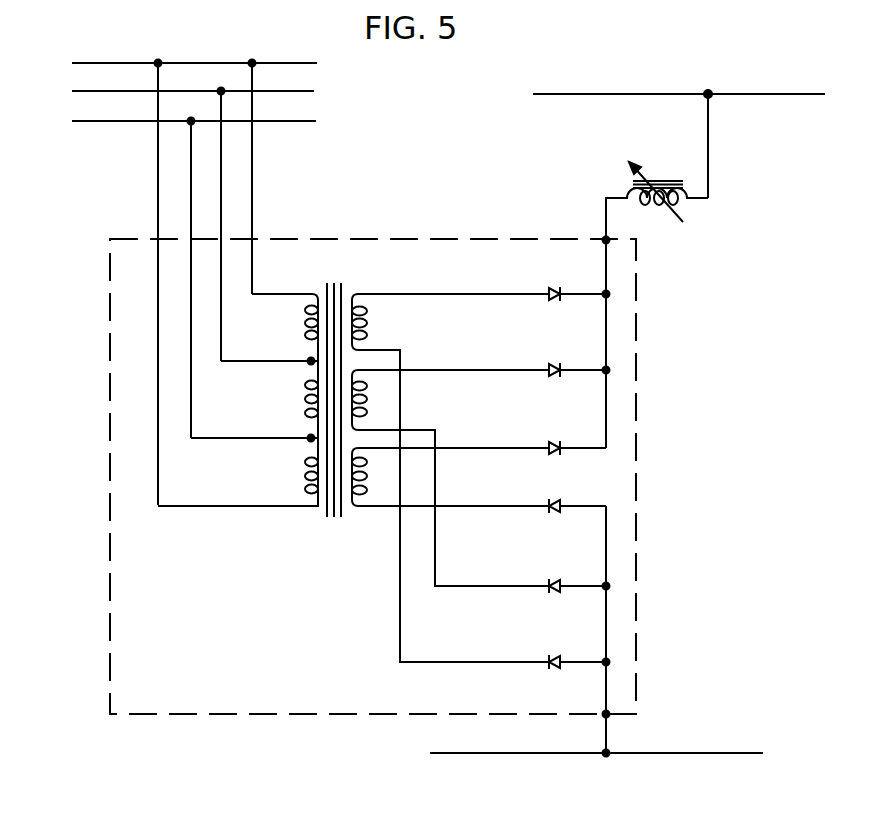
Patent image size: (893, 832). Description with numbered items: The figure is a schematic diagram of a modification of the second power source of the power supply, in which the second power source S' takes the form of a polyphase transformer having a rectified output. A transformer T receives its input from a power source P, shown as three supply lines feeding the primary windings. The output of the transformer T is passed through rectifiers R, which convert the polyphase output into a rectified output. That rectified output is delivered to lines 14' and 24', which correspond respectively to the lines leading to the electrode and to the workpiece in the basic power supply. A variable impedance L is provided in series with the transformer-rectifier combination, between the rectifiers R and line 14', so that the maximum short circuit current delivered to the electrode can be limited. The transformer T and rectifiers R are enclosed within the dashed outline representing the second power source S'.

The power source P is at (68, 57).
The second power source S' is at (348, 476).
The transformer T is at (344, 281).
The rectifiers R is at (551, 362).
The variable impedance L is at (654, 174).
The line 14' is at (679, 129).
The line 24' is at (596, 774).